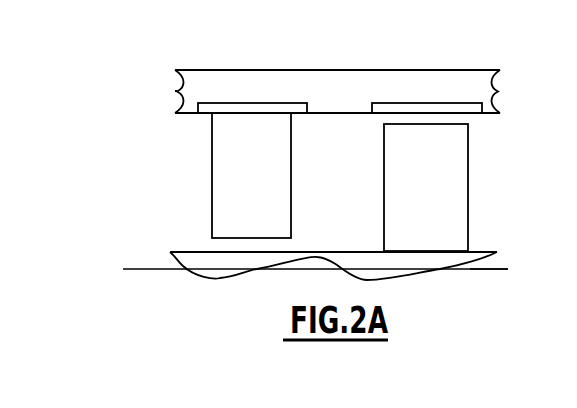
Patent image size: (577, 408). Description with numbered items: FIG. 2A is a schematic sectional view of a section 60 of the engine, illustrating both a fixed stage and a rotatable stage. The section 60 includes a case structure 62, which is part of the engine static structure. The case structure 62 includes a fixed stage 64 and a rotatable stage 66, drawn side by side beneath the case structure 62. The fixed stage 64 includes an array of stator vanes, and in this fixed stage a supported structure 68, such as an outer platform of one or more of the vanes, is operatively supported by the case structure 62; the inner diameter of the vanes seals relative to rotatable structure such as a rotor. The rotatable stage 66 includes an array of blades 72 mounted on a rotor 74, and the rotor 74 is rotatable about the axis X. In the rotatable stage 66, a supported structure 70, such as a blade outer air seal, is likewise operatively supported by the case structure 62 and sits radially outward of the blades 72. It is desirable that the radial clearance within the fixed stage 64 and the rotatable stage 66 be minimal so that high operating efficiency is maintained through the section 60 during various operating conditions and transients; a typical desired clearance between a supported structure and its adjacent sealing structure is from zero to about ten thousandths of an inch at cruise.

The section 60 is at (92, 146).
The case structure 62 is at (452, 87).
The fixed stage 64 is at (250, 50).
The rotatable stage 66 is at (410, 50).
The supported structure 68 is at (208, 112).
The supported structure 70 is at (377, 110).
The blades 72 is at (452, 180).
The rotor 74 is at (350, 260).
The axis X is at (488, 270).